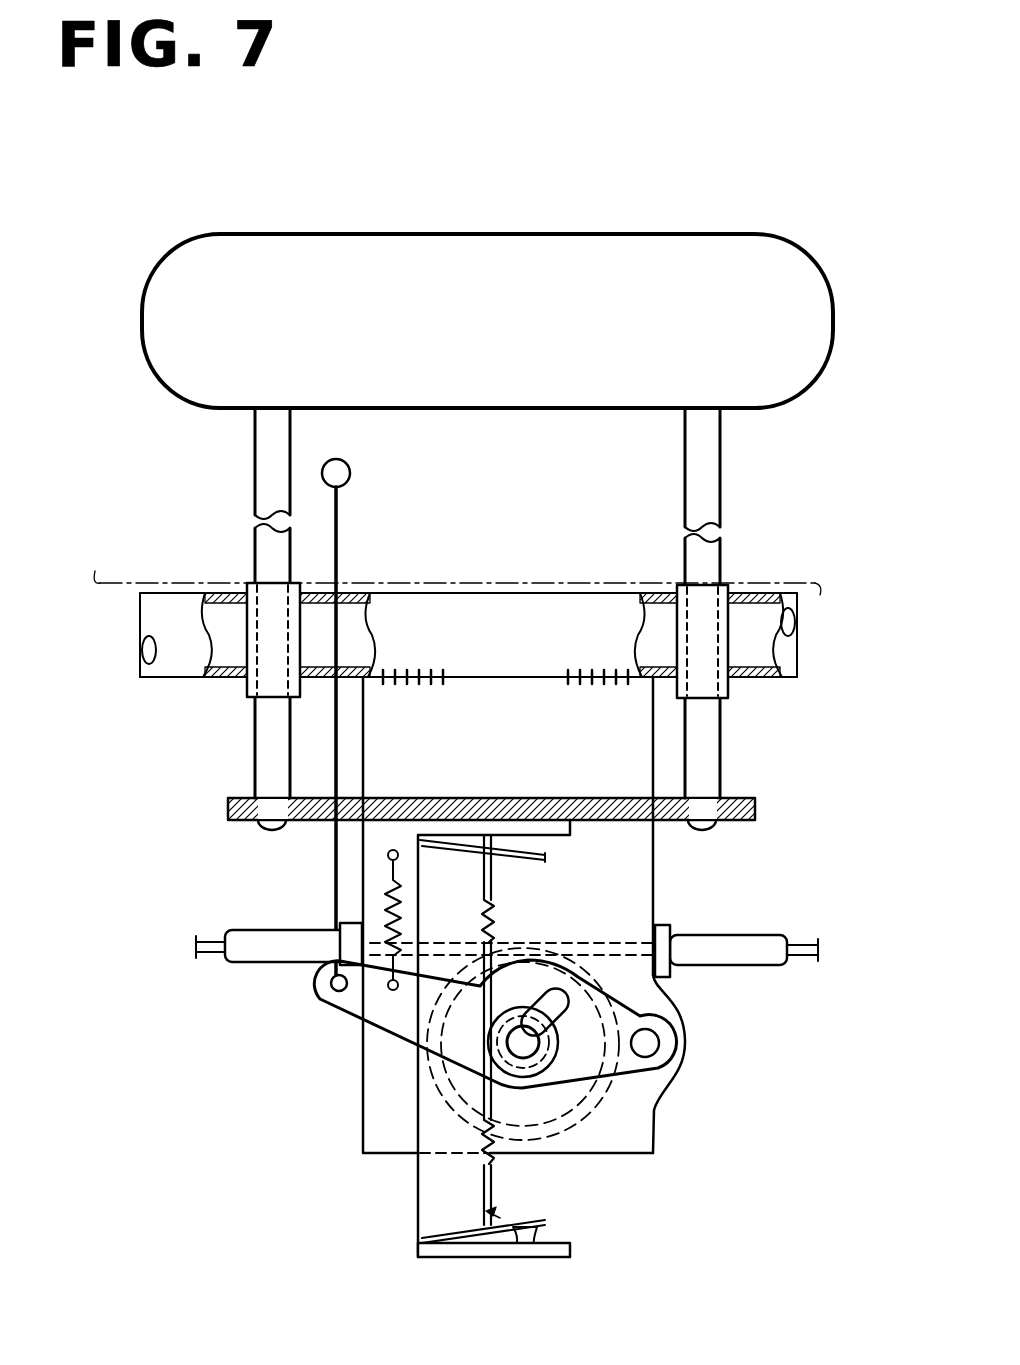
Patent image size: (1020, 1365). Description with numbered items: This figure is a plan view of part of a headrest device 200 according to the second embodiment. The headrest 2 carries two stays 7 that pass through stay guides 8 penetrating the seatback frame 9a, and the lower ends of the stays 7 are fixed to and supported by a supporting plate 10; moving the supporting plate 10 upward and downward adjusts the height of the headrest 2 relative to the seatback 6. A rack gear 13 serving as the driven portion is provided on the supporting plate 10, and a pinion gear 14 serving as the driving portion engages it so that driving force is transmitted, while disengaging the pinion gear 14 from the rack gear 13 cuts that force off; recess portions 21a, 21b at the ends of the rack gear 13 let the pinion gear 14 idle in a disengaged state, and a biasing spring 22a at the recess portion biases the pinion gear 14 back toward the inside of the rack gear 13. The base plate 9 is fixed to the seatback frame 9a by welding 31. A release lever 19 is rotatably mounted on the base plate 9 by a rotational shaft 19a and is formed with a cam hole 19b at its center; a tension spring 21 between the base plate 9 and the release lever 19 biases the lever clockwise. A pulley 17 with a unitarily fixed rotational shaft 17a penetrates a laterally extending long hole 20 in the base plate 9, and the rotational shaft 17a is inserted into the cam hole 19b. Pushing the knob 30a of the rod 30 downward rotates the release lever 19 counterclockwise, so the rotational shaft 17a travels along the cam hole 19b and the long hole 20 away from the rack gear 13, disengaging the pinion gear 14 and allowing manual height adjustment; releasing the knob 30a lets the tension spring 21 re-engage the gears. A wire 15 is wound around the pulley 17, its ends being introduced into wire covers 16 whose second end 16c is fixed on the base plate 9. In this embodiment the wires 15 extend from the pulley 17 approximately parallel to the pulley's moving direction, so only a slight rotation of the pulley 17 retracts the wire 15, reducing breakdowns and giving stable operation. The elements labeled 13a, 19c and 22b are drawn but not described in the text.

The headrest 2 is at (803, 292).
The seatback 6 is at (570, 583).
The stay 7 is at (255, 770).
The stay guide 8 is at (247, 690).
The base plate 9 is at (363, 1120).
The seatback frame 9a is at (142, 612).
The supporting plate 10 is at (226, 808).
The rack gear 13 is at (475, 1160).
The shaft spring portion 13a is at (495, 1165).
The pinion gear 14 is at (633, 1140).
The wire 15 is at (250, 938).
The wire cover 16 is at (305, 962).
The second end of wire cover 16c is at (340, 925).
The pulley 17 is at (670, 1005).
The rotational shaft 17a is at (516, 1005).
The release lever 19 is at (353, 1012).
The rotational shaft 19a is at (647, 1043).
The cam hole 19b is at (525, 1010).
The lever pivot 19c is at (328, 994).
The long hole 20 is at (650, 1114).
The tension spring 21 is at (390, 884).
The recess portion 21a is at (511, 1244).
The recess portion 21b is at (492, 873).
The biasing spring 22a is at (538, 1247).
The upper leaf spring 22b is at (546, 854).
The rod 30 is at (335, 843).
The knob 30a is at (350, 473).
The welding 31 is at (422, 655).
The headrest device 200 is at (752, 1092).